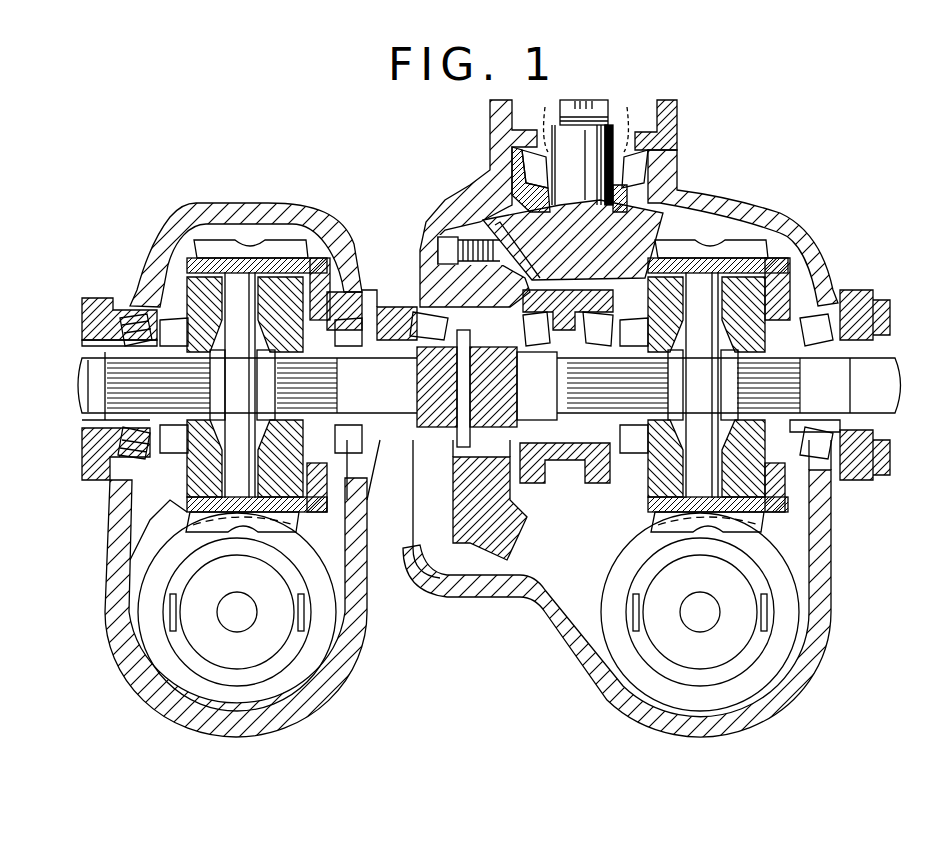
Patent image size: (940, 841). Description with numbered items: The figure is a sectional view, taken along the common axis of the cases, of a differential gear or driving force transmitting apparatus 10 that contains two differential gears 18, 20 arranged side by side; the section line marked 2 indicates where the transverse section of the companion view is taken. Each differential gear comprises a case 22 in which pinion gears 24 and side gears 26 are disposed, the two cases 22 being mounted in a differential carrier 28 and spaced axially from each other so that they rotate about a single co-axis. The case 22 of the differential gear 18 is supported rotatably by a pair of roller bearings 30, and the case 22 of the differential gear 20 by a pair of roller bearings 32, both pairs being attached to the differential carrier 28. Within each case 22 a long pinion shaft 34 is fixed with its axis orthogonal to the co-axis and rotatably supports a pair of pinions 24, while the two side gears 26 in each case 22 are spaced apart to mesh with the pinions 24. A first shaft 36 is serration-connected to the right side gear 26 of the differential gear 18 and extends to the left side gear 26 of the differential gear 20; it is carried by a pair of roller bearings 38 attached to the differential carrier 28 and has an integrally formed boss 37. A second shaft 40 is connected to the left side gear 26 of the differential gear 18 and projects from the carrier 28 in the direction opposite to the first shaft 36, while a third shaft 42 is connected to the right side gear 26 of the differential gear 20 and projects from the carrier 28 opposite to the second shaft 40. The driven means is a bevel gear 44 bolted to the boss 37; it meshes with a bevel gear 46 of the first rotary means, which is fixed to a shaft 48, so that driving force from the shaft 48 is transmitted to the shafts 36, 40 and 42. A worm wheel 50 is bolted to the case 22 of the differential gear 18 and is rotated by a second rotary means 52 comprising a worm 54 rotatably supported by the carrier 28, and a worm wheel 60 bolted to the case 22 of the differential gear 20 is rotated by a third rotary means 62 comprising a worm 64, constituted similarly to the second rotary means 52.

The section line 2- 2 is at (242, 160).
The driving force transmitting apparatus 10 is at (815, 218).
The differential gear 18 is at (215, 200).
The differential gear 20 is at (736, 214).
The case 22 is at (193, 291).
The pinion gear 24 is at (218, 296).
The side gear 26 is at (175, 461).
The differential carrier 28 is at (809, 248).
The roller bearings 30 is at (139, 311).
The roller bearings 32 is at (605, 306).
The long pinion shaft 34 is at (345, 302).
The first shaft 36 is at (597, 400).
The boss 37 is at (543, 302).
The roller bearings 38 is at (421, 324).
The second shaft 40 is at (89, 438).
The third shaft 42 is at (876, 376).
The bevel gear 44 is at (492, 545).
The bevel gear 46 is at (511, 201).
The shaft 48 is at (640, 128).
The worm wheel 50 is at (195, 533).
The second rotary means 52 is at (163, 684).
The worm 54 is at (185, 682).
The worm wheel 60 is at (783, 546).
The third rotary means 62 is at (793, 671).
The worm 64 is at (788, 626).